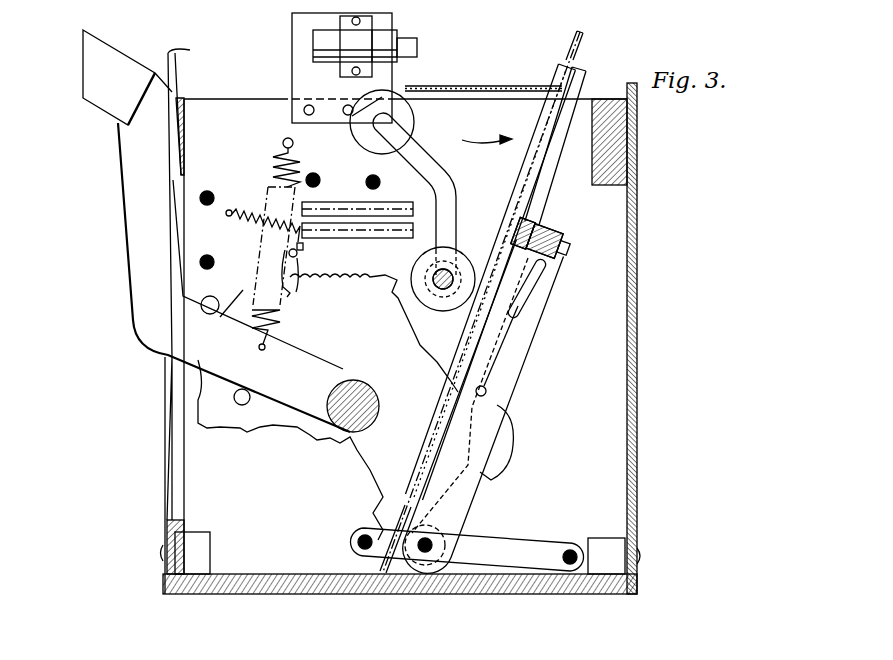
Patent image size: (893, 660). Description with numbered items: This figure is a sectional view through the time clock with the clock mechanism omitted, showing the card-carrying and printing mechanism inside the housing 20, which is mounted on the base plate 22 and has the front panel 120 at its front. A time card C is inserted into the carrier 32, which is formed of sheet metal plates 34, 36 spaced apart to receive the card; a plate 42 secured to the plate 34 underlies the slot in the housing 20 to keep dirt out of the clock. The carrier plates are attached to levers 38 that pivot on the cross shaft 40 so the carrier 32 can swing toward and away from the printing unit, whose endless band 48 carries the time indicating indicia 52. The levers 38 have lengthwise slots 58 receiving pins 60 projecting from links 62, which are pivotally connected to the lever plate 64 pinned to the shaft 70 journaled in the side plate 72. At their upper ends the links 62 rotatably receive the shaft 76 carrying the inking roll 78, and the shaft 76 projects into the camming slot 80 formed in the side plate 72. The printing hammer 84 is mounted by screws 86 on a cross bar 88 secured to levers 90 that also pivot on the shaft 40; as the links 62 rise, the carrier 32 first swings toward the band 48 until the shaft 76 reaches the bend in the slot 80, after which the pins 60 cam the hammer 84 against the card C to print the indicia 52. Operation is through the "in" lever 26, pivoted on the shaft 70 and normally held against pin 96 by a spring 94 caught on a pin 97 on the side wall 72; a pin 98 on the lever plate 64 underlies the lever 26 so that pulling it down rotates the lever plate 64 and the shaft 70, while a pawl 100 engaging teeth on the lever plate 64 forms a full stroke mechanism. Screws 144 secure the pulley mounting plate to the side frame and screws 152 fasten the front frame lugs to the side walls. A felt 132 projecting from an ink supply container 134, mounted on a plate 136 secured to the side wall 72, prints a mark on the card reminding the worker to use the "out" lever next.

The housing 20 is at (637, 362).
The base plate 22 is at (445, 594).
The "in" lever 26 is at (133, 308).
The carrier 32 is at (481, 129).
The sheet metal plate 34 is at (530, 150).
The sheet metal plate 36 is at (540, 170).
The levers 38 is at (462, 527).
The cross shaft 40 is at (433, 546).
The plate 42 is at (470, 88).
The endless band 48 is at (413, 217).
The time indicating indicia 52 is at (430, 206).
The slots 58 is at (518, 310).
The pins 60 is at (487, 390).
The links 62 is at (502, 347).
The lever plate 64 is at (514, 466).
The shaft 70 is at (356, 385).
The side plate 72 is at (328, 320).
The shaft 76 is at (436, 286).
The inking roll 78 is at (485, 250).
The camming slot 80 is at (428, 156).
The printing hammer 84 is at (527, 232).
The screws 86 is at (567, 252).
The cross bar 88 is at (553, 230).
The levers 90 is at (541, 285).
The spring 94 is at (272, 165).
The pin 96 is at (236, 284).
The pin 97 is at (294, 143).
The pin 98 is at (250, 394).
The pawl 100 is at (302, 272).
The panel 120 is at (170, 528).
The felt 132 is at (417, 45).
The ink supply container 134 is at (372, 30).
The plate 136 is at (292, 72).
The screws 144 is at (367, 186).
The screws 152 is at (205, 205).
The time card C is at (586, 42).